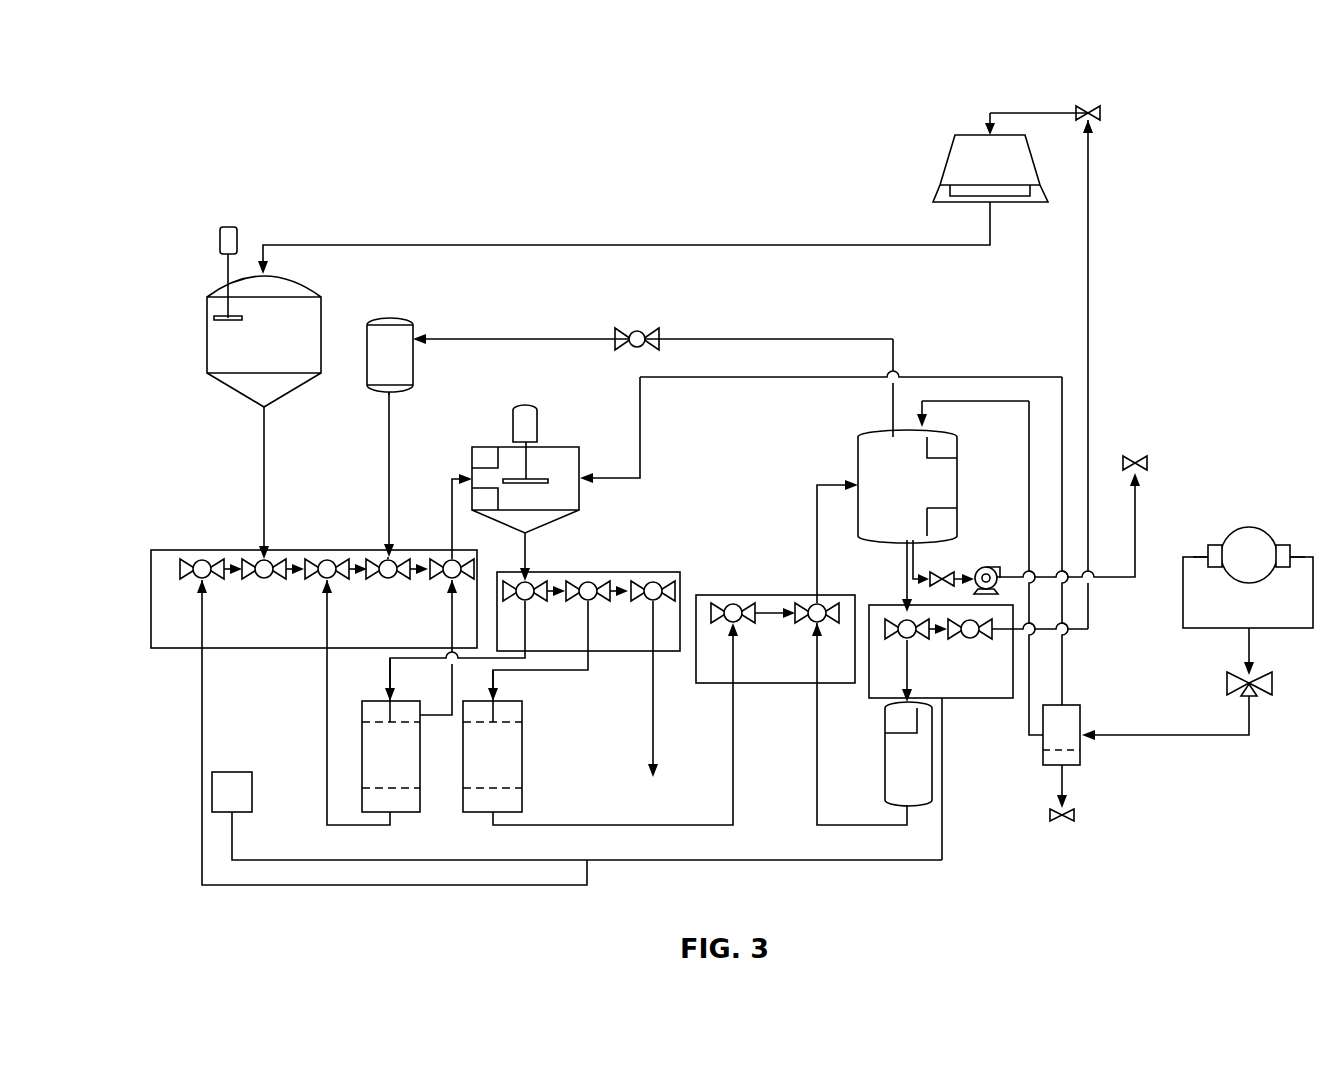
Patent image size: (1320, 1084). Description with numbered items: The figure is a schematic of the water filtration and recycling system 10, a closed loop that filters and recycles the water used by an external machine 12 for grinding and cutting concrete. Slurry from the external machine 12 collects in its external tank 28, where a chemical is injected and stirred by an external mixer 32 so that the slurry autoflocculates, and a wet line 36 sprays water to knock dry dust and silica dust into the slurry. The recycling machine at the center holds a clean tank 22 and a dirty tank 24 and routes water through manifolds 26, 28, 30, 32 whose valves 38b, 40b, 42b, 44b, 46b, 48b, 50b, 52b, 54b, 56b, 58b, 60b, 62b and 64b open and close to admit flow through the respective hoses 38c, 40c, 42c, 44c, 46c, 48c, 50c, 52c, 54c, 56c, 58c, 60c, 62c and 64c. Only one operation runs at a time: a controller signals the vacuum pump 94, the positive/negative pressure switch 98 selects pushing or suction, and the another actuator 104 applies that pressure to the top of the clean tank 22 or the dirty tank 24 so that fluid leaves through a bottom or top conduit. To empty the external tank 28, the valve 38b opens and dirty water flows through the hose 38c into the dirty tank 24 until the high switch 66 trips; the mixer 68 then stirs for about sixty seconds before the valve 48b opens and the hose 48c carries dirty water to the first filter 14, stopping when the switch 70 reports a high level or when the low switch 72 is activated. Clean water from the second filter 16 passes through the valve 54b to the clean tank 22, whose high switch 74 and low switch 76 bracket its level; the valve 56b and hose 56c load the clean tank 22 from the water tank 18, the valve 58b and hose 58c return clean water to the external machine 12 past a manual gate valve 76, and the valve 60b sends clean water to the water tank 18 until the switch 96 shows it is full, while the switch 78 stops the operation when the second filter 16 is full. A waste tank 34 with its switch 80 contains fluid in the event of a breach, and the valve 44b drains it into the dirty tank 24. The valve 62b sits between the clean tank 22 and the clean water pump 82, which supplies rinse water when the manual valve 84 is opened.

The water filtration and recycling system 10 is at (1182, 72).
The external machine 12 is at (963, 162).
The first filter 14 is at (365, 753).
The second filter 16 is at (508, 753).
The water tank 18 is at (895, 770).
The clean tank 22 is at (928, 500).
The dirty tank 24 is at (565, 466).
The manifold 26 is at (151, 605).
The external tank 28 is at (218, 350).
The manifold 30 is at (773, 598).
The external mixer 32 is at (228, 240).
The waste tank 34 is at (628, 862).
The wet line 36 is at (388, 437).
The valve 38b is at (270, 580).
The hose 38c is at (290, 562).
The valve 40b is at (330, 585).
The hose 40c is at (350, 564).
The valve 42b is at (450, 580).
The hose 42c is at (466, 482).
The valve 44b is at (210, 580).
The hose 44c is at (218, 560).
The valve 46b is at (396, 580).
The hose 46c is at (415, 564).
The valve 48b is at (520, 584).
The hose 48c is at (530, 650).
The valve 50b is at (583, 584).
The hose 50c is at (592, 638).
The valve 52b is at (648, 584).
The hose 52c is at (655, 700).
The valve 54b is at (735, 604).
The hose 54c is at (737, 626).
The valve 56b is at (817, 603).
The hose 56c is at (812, 494).
The valve 58b is at (968, 640).
The hose 58c is at (1012, 655).
The valve 60b is at (905, 618).
The hose 60c is at (898, 688).
The valve 62b is at (930, 578).
The hose 62c is at (952, 572).
The valve 64b is at (637, 330).
The hose 64c is at (560, 334).
The high switch 66 is at (490, 458).
The mixer 68 is at (540, 425).
The switch 70 is at (365, 707).
The low switch 72 is at (478, 497).
The high switch 74 is at (942, 444).
The low switch 76 is at (1100, 115).
The switch 78 is at (495, 707).
The switch 80 is at (247, 806).
The clean water pump 82 is at (997, 565).
The manual valve 84 is at (1147, 465).
The vacuum pump 94 is at (1195, 600).
The switch 96 is at (895, 726).
The positive/negative pressure switch 98 is at (1227, 685).
The another actuator 104 is at (1078, 742).